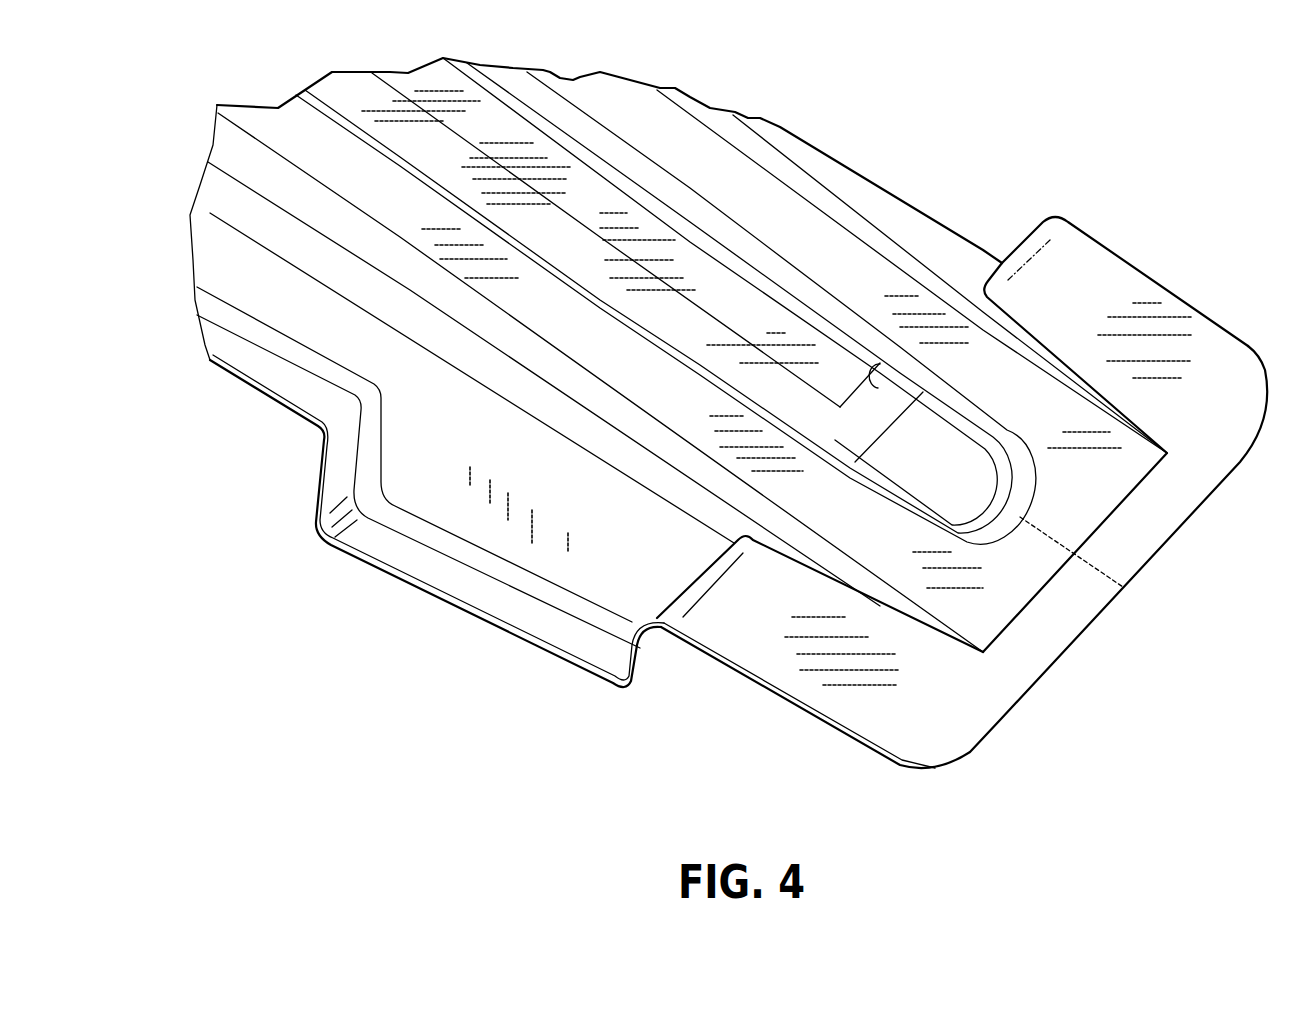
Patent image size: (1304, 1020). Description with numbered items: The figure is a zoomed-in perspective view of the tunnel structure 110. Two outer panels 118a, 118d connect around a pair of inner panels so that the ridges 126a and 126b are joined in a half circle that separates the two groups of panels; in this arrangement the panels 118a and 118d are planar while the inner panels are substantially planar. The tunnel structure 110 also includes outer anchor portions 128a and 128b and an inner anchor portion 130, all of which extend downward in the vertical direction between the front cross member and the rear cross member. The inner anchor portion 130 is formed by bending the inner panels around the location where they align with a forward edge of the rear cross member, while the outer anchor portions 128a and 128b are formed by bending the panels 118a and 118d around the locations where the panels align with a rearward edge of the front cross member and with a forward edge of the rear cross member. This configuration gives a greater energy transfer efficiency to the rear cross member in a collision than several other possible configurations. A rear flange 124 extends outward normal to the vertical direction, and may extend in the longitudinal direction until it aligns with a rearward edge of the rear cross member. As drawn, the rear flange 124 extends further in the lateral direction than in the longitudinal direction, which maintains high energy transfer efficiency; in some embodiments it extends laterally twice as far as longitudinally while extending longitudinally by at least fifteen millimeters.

The tunnel structure 110 is at (720, 468).
The panel 118a is at (1100, 483).
The panel 118d is at (1017, 573).
The rear flange 124 is at (1183, 483).
The ridge 126a is at (960, 400).
The ridge 126b is at (770, 413).
The outer anchor portion 128a is at (513, 607).
The outer anchor portion 128b is at (983, 250).
The inner anchor portion 130 is at (830, 400).